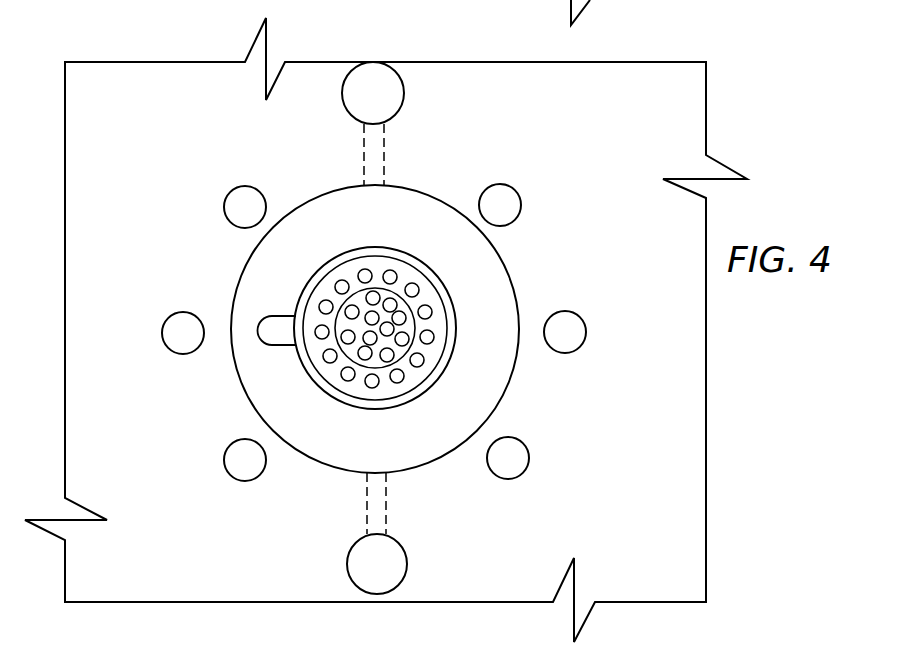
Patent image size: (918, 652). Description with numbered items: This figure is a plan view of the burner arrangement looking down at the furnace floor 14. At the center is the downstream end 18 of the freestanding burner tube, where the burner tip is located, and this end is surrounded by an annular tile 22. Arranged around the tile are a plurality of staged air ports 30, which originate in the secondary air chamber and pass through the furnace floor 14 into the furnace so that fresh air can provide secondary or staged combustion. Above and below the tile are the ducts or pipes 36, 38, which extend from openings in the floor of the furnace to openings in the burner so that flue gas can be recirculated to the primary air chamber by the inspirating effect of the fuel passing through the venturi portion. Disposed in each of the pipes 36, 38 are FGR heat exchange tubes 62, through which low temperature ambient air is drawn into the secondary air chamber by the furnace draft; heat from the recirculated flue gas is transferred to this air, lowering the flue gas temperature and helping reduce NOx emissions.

The furnace floor 14 is at (640, 126).
The downstream end 18 is at (407, 278).
The annular tile 22 is at (488, 301).
The staged air ports 30 is at (257, 218).
The pipe 36 is at (390, 576).
The pipe 38 is at (386, 105).
The FGR heat exchange tubes 62 is at (364, 160).